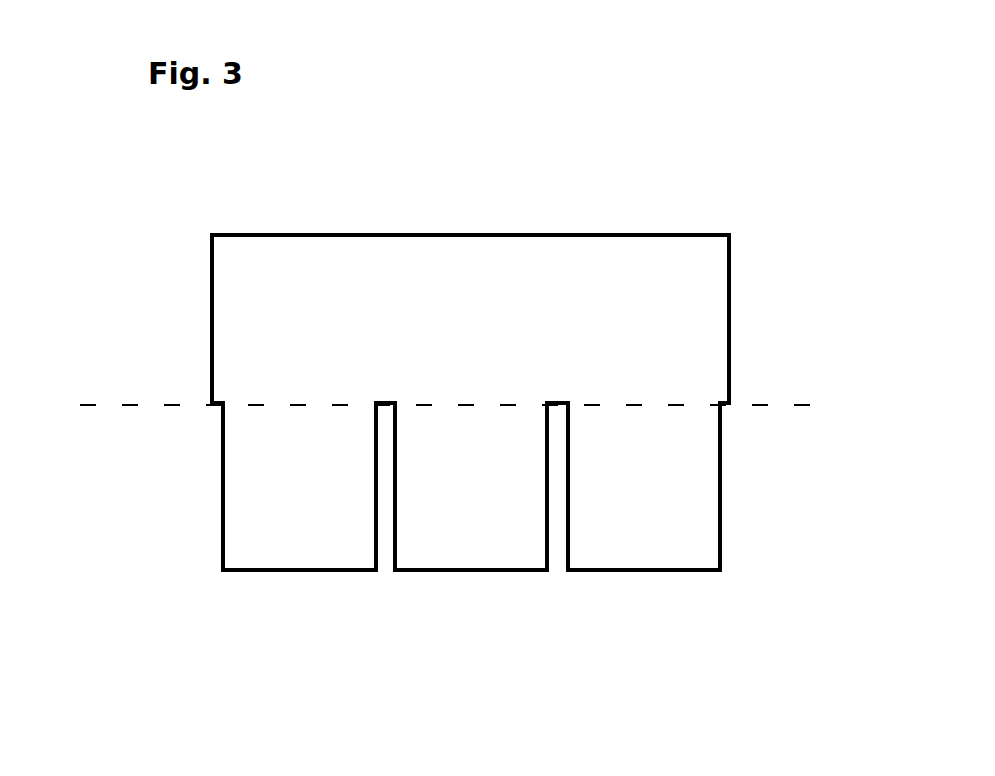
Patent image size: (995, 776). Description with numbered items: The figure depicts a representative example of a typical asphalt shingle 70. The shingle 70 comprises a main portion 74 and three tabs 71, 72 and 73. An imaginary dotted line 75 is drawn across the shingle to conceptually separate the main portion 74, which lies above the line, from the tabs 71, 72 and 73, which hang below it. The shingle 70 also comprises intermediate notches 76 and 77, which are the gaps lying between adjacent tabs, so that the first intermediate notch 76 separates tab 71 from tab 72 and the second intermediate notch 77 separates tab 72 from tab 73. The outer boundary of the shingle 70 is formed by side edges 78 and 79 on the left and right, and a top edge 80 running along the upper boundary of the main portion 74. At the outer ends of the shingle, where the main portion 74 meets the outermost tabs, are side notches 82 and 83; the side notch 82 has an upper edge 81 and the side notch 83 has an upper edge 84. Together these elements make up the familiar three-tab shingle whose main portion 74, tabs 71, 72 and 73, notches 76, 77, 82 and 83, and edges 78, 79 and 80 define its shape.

The asphalt shingle 70 is at (797, 208).
The tab 71 is at (303, 548).
The tab 72 is at (477, 532).
The tab 73 is at (650, 521).
The main portion 74 is at (472, 309).
The imaginary dotted line 75 is at (96, 405).
The intermediate notch 76 is at (383, 498).
The intermediate notch 77 is at (560, 478).
The side edge 78 is at (212, 318).
The side edge 79 is at (732, 300).
The top edge 80 is at (508, 234).
The upper edge 81 is at (722, 402).
The side notch 82 is at (726, 441).
The side notch 83 is at (221, 458).
The upper edge 84 is at (220, 400).